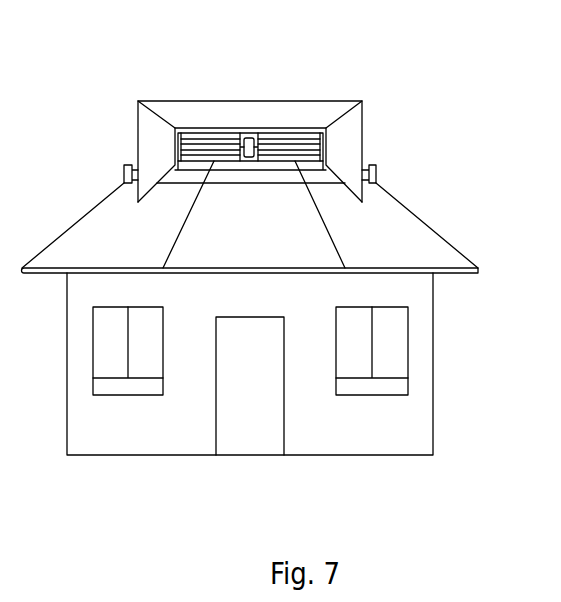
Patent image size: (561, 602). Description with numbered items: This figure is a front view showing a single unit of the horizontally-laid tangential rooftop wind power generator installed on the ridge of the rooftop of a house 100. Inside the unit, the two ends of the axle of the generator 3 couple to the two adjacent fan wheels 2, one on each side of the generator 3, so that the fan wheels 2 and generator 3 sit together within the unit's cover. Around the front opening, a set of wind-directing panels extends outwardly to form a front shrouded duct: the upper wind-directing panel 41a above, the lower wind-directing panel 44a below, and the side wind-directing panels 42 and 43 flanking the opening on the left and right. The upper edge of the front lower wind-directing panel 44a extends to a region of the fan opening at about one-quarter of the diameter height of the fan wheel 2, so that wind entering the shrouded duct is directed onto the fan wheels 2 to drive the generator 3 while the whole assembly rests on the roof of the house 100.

The fan wheel 2 is at (211, 147).
The generator 3 is at (252, 143).
The upper wind-directing panel 41a is at (222, 105).
The side wind-directing panel 42 is at (147, 142).
The side wind-directing panel 43 is at (352, 143).
The lower wind-directing panel 44a is at (258, 163).
The house 100 is at (322, 423).